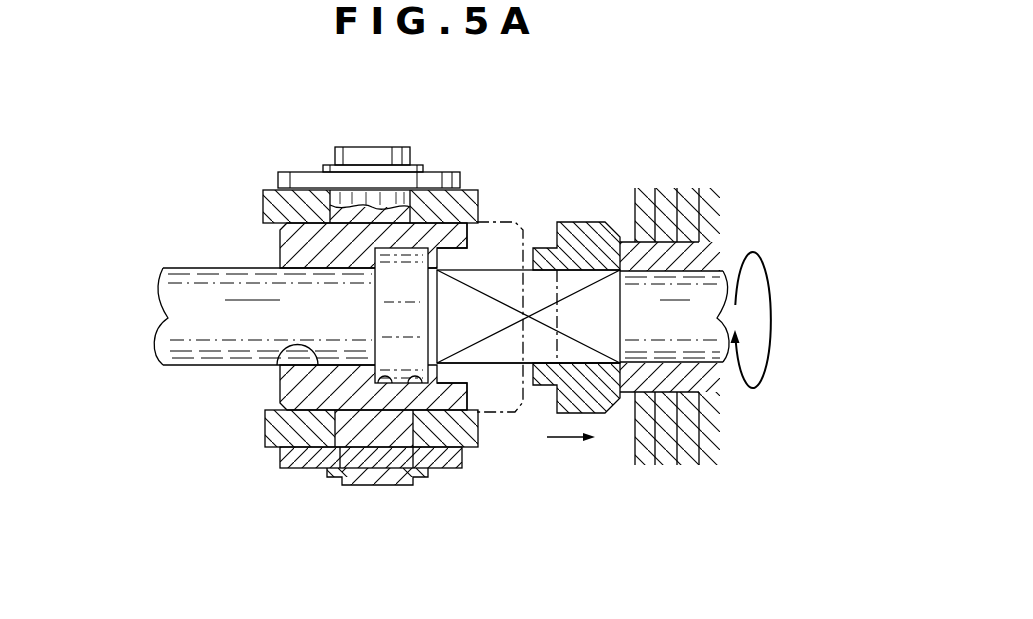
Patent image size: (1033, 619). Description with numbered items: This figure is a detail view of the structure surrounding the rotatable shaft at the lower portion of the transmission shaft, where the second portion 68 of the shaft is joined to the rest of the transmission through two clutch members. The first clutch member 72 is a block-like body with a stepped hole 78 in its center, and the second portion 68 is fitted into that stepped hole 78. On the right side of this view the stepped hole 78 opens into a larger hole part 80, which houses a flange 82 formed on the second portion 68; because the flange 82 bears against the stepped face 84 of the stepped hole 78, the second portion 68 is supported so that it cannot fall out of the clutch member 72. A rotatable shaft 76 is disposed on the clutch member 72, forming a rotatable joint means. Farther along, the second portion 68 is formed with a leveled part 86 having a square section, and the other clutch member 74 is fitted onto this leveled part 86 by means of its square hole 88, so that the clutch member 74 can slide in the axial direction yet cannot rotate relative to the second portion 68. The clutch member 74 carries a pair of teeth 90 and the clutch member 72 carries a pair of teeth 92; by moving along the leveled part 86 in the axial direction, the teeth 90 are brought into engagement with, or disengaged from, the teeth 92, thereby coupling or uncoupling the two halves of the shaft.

The second portion 68 is at (206, 262).
The clutch member 72 is at (270, 251).
The clutch member 74 is at (588, 208).
The rotatable shaft 76 is at (378, 152).
The stepped hole 78 is at (276, 367).
The larger hole part 80 is at (398, 385).
The flange 82 is at (387, 293).
The stepped face 84 is at (388, 385).
The leveled part 86 is at (515, 348).
The square hole 88 is at (583, 355).
The teeth 90 is at (546, 250).
The teeth 92 is at (463, 242).